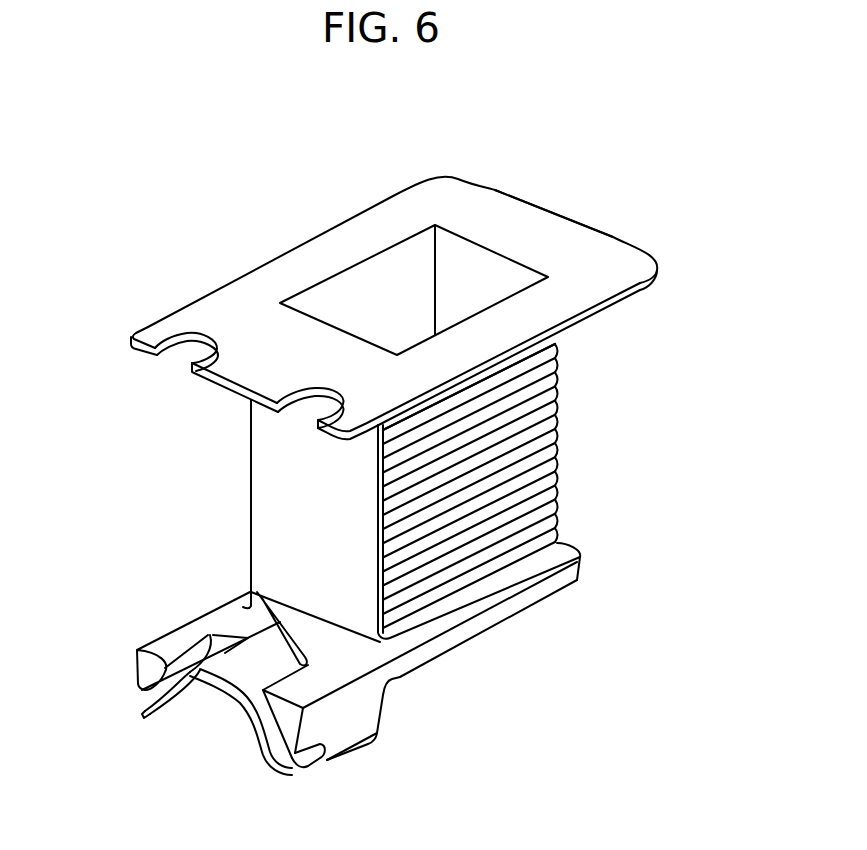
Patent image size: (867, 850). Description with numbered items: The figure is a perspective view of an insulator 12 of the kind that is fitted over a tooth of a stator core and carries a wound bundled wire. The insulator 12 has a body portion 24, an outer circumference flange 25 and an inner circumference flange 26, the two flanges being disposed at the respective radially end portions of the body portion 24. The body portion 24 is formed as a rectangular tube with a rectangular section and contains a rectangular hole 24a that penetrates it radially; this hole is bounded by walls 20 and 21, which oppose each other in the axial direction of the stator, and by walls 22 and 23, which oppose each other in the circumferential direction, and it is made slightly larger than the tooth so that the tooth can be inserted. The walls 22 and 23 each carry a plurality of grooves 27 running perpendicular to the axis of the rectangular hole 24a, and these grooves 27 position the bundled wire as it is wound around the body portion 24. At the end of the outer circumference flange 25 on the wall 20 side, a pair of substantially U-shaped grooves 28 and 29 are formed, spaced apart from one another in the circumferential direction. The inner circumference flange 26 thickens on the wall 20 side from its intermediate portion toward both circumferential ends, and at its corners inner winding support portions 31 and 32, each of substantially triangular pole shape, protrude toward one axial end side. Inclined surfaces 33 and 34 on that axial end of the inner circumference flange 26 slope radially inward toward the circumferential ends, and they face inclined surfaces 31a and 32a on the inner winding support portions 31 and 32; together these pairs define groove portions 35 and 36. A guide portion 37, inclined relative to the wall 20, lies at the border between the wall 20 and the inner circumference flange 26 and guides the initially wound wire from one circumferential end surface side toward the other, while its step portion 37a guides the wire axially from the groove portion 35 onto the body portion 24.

The insulator 12 is at (638, 172).
The wall 20 is at (302, 469).
The wall 21 is at (560, 380).
The wall 22 is at (503, 478).
The wall 23 is at (250, 430).
The body portion 24 is at (565, 506).
The rectangular hole 24a is at (479, 250).
The outer circumference flange 25 is at (596, 256).
The inner circumference flange 26 is at (492, 592).
The grooves 27 is at (556, 428).
The groove 28 is at (320, 415).
The groove 29 is at (205, 362).
The inner winding support portion 31 is at (283, 728).
The inclined surface 31a is at (253, 737).
The inner winding support portion 32 is at (142, 670).
The inclined surface 32a is at (188, 668).
The inclined surface 33 is at (282, 760).
The inclined surface 34 is at (143, 716).
The groove portion 35 is at (320, 760).
The groove portion 36 is at (138, 700).
The guide portion 37 is at (308, 628).
The step portion 37a is at (256, 617).